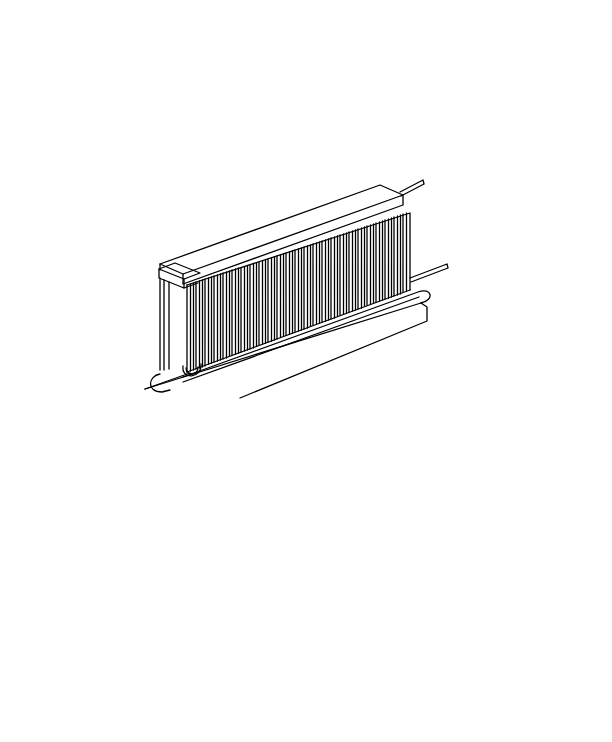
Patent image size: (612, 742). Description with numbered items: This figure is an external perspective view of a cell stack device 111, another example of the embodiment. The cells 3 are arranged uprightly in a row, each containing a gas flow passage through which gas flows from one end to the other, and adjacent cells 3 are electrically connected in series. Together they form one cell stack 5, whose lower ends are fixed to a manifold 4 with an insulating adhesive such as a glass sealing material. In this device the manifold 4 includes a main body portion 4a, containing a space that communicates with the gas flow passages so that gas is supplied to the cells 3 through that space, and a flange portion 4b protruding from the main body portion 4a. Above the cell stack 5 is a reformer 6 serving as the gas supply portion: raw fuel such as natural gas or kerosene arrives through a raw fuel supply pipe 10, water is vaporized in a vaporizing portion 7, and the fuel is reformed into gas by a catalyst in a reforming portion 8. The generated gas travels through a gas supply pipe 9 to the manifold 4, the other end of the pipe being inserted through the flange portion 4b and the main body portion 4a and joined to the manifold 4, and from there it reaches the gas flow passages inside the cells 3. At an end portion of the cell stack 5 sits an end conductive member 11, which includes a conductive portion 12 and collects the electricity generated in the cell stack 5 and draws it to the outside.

The cell stack device 111 is at (338, 110).
The cells 3 is at (400, 258).
The manifold 4 is at (172, 477).
The main body portion 4a is at (210, 390).
The flange portion 4b is at (192, 393).
The cell stack 5 is at (331, 368).
The reformer 6 is at (275, 138).
The vaporizing portion 7 is at (179, 262).
The reforming portion 8 is at (296, 226).
The gas supply pipe 9 is at (162, 318).
The raw fuel supply pipe 10 is at (409, 188).
The end conductive member 11 is at (193, 349).
The conductive portion 12 is at (148, 391).